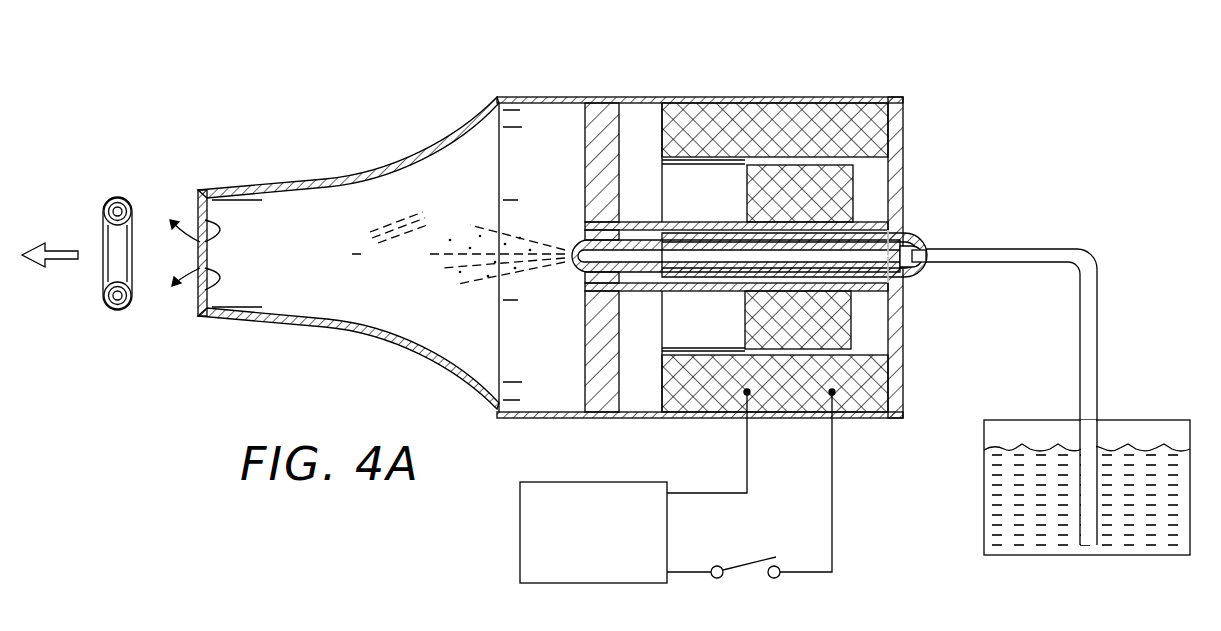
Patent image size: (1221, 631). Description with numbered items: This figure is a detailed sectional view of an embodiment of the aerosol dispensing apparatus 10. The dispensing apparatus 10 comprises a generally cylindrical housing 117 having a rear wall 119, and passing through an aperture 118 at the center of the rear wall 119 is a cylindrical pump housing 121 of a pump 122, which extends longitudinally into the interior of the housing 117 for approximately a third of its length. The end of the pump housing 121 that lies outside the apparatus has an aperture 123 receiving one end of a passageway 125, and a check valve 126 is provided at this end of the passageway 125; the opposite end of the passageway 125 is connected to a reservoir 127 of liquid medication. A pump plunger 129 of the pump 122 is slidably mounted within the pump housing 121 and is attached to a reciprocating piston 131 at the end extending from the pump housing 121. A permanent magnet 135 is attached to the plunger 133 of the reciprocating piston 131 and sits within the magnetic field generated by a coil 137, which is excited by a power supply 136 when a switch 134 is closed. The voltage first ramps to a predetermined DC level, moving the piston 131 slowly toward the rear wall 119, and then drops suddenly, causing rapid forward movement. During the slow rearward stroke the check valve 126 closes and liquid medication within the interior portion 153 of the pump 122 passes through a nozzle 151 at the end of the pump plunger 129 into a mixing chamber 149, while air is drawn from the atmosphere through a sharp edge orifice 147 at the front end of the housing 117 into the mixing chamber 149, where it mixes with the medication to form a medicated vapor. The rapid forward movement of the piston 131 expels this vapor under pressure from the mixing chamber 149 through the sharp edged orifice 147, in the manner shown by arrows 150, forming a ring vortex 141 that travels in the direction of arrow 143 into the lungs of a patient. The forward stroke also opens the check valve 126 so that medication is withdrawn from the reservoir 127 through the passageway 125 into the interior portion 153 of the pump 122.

The dispensing apparatus 10 is at (290, 100).
The housing 117 is at (775, 97).
The aperture 118 is at (900, 232).
The rear wall 119 is at (902, 103).
The pump housing 121 is at (888, 280).
The pump 122 is at (577, 235).
The aperture 123 is at (935, 248).
The passageway 125 is at (1098, 300).
The check valve 126 is at (912, 272).
The reservoir 127 is at (1160, 420).
The pump plunger 129 is at (633, 222).
The reciprocating piston 131 is at (585, 138).
The plunger 133 is at (708, 216).
The switch 134 is at (748, 565).
The permanent magnet 135 is at (855, 175).
The power supply 136 is at (520, 535).
The coil 137 is at (872, 108).
The ring vortex 141 is at (103, 297).
The arrow 143 is at (55, 244).
The sharp edge orifice 147 is at (200, 235).
The mixing chamber 149 is at (313, 265).
The arrows 150 is at (205, 262).
The nozzle 151 is at (572, 266).
The interior portion 153 is at (798, 256).